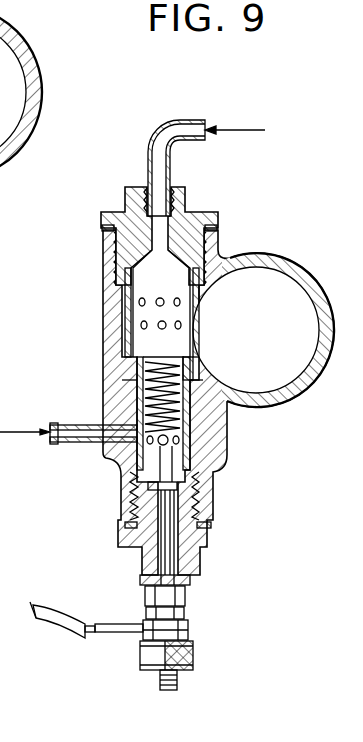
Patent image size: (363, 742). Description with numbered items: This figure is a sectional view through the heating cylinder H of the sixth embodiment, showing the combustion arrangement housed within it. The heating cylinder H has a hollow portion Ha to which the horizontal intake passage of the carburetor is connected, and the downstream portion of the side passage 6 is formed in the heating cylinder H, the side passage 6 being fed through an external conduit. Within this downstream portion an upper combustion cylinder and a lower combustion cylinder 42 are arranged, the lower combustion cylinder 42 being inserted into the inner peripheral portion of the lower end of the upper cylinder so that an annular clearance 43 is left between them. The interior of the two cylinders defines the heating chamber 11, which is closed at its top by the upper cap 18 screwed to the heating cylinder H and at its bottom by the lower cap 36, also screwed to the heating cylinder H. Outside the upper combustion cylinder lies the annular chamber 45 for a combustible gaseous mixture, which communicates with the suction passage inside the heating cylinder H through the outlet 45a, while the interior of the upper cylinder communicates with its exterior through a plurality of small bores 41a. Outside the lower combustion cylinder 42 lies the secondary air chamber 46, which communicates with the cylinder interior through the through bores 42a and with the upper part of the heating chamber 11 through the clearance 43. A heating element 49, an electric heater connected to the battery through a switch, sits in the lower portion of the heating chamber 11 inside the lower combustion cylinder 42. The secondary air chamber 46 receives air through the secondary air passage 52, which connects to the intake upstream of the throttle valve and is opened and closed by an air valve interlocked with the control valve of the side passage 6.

The side passage 6 is at (238, 128).
The upper cap 18 is at (205, 212).
The heating cylinder H is at (296, 262).
The hollow portion Ha is at (276, 353).
The annular chamber for a combustible gaseous mixture 45 is at (125, 303).
The outlet 45a is at (198, 316).
The annular clearance 43 is at (132, 343).
The small bores 41a is at (149, 299).
The heating chamber 11 is at (171, 357).
The secondary air chamber 46 is at (138, 393).
The lower combustion cylinder 42 is at (138, 452).
The through bores 42a is at (185, 442).
The heating element 49 is at (175, 412).
The secondary air passage 52 is at (22, 433).
The lower cap 36 is at (142, 560).